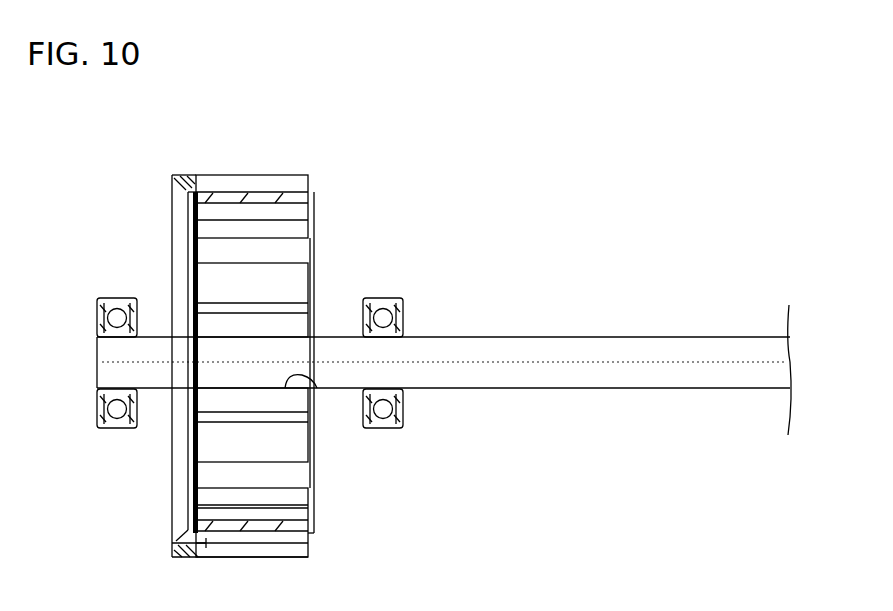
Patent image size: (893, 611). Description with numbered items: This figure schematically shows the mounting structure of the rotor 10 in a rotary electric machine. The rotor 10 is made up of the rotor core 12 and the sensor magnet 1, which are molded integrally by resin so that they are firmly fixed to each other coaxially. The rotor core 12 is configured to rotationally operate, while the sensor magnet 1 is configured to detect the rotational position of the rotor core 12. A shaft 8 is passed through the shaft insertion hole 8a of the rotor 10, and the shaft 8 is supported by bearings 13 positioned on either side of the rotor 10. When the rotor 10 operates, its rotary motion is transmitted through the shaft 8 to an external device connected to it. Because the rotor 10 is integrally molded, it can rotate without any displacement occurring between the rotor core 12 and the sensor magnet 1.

The rotor 10 is at (104, 168).
The sensor magnet 1 is at (217, 366).
The rotor core 12 is at (208, 366).
The bearings 13 is at (279, 374).
The shaft 8 is at (444, 356).
The shaft insertion hole 8a is at (315, 384).